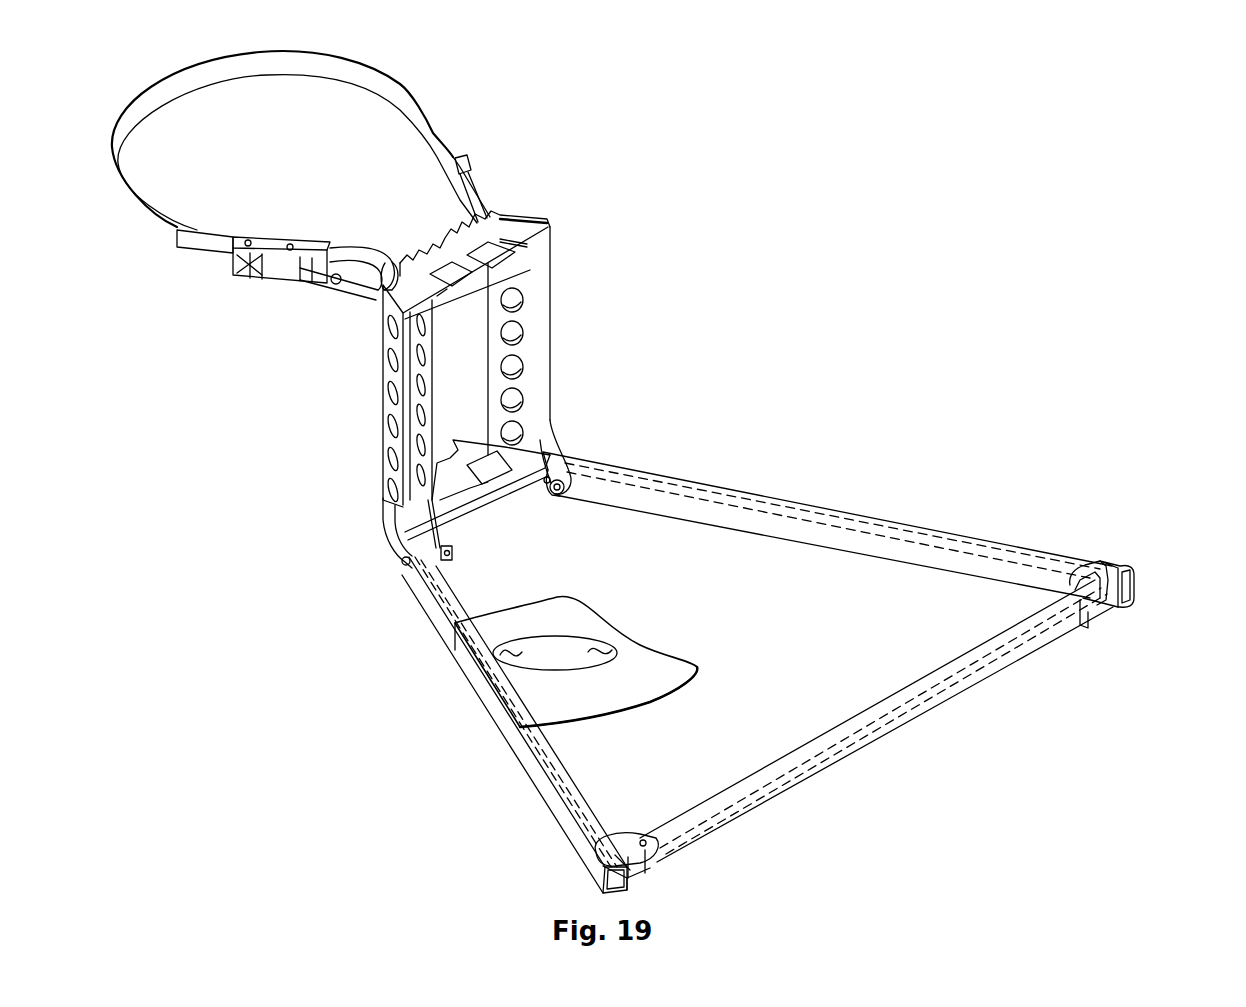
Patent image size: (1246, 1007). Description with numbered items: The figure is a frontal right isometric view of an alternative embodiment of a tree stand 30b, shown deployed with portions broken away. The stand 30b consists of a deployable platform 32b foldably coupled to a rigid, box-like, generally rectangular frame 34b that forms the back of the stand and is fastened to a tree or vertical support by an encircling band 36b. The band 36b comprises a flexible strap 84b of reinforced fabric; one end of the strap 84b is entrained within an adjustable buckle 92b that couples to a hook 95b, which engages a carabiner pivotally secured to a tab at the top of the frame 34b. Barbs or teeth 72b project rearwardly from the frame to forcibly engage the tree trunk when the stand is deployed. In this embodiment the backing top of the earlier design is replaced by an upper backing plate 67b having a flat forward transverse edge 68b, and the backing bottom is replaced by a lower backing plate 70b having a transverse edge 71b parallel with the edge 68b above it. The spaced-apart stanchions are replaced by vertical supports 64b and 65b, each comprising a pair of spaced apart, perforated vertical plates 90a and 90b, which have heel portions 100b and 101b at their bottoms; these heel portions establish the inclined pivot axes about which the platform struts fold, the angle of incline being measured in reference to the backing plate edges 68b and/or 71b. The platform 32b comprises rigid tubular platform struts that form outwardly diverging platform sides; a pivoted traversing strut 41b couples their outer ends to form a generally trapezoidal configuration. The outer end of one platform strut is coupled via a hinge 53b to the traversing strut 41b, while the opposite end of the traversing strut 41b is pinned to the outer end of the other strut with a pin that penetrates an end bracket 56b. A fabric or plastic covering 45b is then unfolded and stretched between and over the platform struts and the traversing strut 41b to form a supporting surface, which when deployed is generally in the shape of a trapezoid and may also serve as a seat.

The stand 30b is at (813, 619).
The deployable platform 32b is at (807, 505).
The frame 34b is at (380, 416).
The encircling band 36b is at (321, 129).
The traversing strut 41b is at (887, 737).
The covering 45b is at (576, 661).
The hinge 53b is at (650, 865).
The end bracket 56b is at (1134, 597).
The vertical support 64b is at (405, 372).
The vertical support 65b is at (578, 360).
The upper backing plate 67b is at (525, 202).
The flat forward transverse edge 68b is at (545, 275).
The lower backing plate 70b is at (475, 488).
The transverse edge 71b is at (555, 485).
The barbs or teeth 72b is at (455, 228).
The strap 84b is at (200, 88).
The perforated vertical plate 90a is at (536, 415).
The perforated vertical plate 90b is at (553, 350).
The adjustable buckle 92b is at (240, 278).
The hook 95b is at (355, 262).
The heel portion 100b is at (405, 555).
The heel portion 101b is at (660, 498).